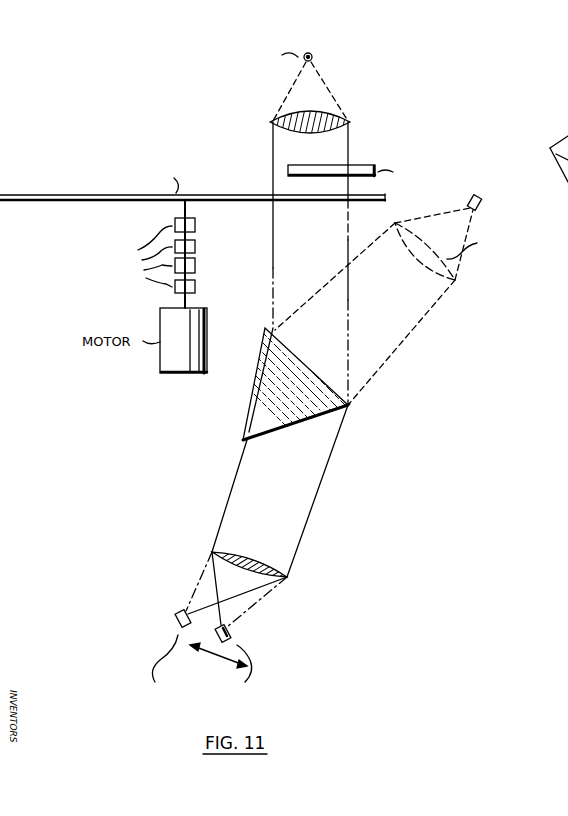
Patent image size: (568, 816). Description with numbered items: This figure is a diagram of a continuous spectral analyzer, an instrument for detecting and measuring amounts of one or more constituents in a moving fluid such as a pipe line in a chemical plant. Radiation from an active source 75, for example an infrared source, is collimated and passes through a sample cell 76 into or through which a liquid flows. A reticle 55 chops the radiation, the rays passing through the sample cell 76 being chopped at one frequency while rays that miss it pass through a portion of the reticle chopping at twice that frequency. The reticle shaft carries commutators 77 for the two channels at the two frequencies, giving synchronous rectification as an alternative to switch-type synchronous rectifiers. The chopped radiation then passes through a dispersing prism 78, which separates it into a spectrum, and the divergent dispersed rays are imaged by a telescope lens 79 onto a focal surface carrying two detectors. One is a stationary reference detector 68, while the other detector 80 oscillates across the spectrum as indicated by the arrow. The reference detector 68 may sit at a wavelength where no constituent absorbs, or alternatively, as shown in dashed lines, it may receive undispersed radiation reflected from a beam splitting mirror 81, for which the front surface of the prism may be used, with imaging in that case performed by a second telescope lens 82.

The reticle 55 is at (204, 194).
The reference detector 68 is at (468, 207).
The active source 75 is at (320, 56).
The sample cell 76 is at (372, 163).
The commutators 77 is at (198, 226).
The dispersing prism 78 is at (350, 408).
The telescope lens 79 is at (288, 576).
The detector 80 is at (232, 636).
The beam splitting mirror 81 is at (349, 399).
The second telescope lens 82 is at (458, 284).